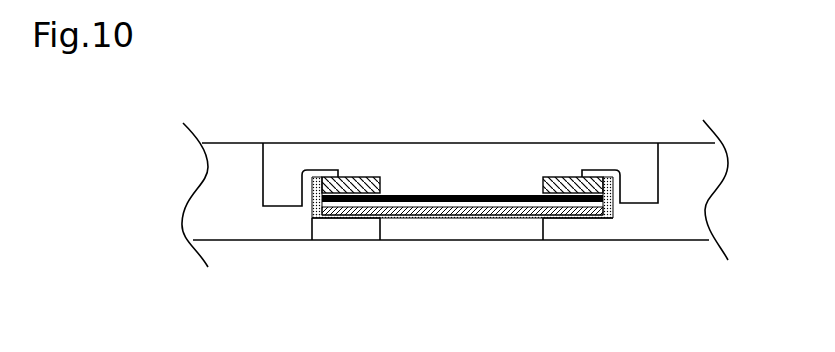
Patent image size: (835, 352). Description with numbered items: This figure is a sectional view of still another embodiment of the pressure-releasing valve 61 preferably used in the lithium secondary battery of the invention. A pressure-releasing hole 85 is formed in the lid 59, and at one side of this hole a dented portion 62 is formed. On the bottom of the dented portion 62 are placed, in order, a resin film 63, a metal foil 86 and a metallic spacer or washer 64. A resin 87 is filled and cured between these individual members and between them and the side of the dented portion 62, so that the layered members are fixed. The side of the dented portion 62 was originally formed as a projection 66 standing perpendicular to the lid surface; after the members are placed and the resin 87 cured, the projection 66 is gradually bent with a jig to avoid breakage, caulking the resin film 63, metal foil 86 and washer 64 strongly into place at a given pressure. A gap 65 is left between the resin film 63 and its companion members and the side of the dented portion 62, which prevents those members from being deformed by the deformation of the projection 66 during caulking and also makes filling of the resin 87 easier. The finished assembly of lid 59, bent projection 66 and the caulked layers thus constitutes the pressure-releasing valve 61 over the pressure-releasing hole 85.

The lid 59 is at (220, 198).
The pressure-releasing valve 61 is at (555, 135).
The dented portion 62 is at (340, 222).
The resin film 63 is at (517, 213).
The metallic spacer (washer) 64 is at (543, 180).
The gap 65 is at (608, 208).
The projection 66 is at (322, 177).
The pressure-releasing hole 85 is at (433, 230).
The metal foil 86 is at (403, 196).
The resin 87 is at (311, 218).